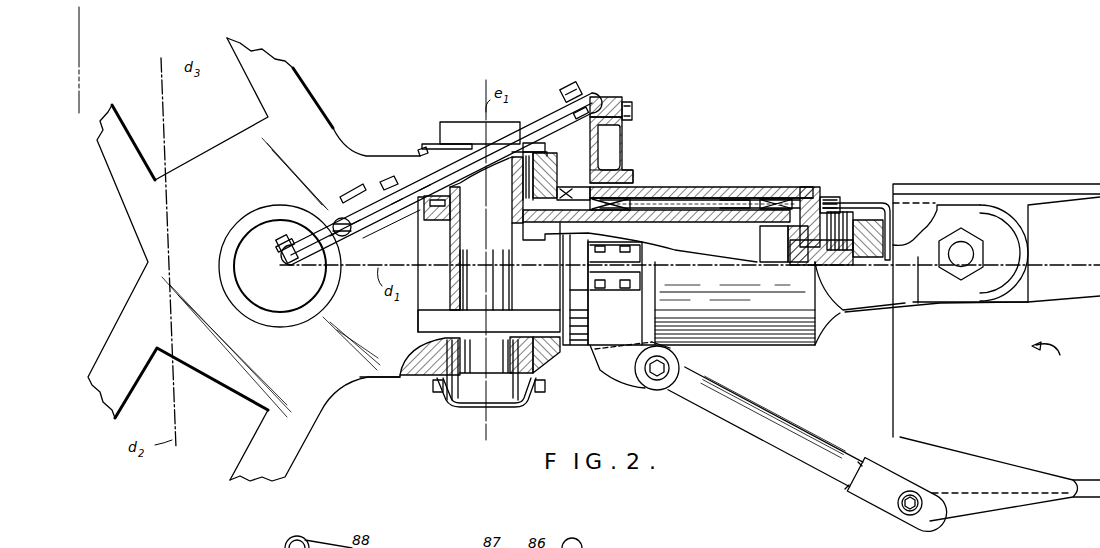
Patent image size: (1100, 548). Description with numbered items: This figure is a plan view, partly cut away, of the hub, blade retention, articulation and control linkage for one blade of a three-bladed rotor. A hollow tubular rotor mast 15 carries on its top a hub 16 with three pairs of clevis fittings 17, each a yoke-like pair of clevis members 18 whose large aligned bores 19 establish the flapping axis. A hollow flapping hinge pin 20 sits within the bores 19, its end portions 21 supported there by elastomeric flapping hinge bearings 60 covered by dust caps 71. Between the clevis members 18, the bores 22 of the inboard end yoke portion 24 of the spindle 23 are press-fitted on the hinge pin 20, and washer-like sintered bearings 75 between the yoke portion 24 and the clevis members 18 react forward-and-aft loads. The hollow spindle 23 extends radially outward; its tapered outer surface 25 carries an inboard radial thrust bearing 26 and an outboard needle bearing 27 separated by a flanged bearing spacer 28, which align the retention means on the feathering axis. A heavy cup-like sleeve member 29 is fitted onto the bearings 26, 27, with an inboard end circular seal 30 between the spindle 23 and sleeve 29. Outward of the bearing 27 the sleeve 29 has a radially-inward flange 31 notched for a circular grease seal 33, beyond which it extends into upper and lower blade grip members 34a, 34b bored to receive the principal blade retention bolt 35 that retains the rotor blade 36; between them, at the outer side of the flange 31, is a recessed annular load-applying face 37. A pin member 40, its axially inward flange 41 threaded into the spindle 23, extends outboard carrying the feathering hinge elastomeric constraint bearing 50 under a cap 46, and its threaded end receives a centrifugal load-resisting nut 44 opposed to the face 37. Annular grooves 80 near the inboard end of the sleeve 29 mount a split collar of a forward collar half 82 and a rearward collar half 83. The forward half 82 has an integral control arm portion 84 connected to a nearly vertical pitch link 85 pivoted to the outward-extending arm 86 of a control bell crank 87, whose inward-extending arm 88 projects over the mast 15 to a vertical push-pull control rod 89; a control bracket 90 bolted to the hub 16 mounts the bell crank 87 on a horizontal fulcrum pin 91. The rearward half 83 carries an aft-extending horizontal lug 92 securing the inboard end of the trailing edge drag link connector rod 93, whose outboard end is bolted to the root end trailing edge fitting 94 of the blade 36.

The rotor mast 15 is at (318, 285).
The hub 16 is at (333, 129).
The clevis fittings 17 is at (296, 74).
The clevis members 18 is at (168, 140).
The bores 19 is at (548, 177).
The flapping hinge pin 20 is at (508, 245).
The end portions 21 is at (512, 173).
The bores 22 is at (458, 210).
The spindle 23 is at (662, 221).
The inboard end yoke portion 24 is at (516, 310).
The tapered radially outer surface 25 is at (708, 207).
The inboard radial thrust bearing 26 is at (660, 197).
The outboard needle bearing 27 is at (770, 206).
The flanged cylindrical bearing spacer 28 is at (734, 207).
The sleeve member 29 is at (721, 190).
The inboard end circular seal 30 is at (572, 197).
The radially-inward flange 31 is at (794, 206).
The circular grease seal 33 is at (795, 235).
The upper blade grip member 34a is at (943, 292).
The lower blade grip member 34b is at (878, 208).
The principal blade retention bolt 35 is at (973, 250).
The rotor blade 36 is at (1046, 361).
The load-applying face 37 is at (822, 204).
The pin member 40 is at (828, 250).
The axially inward flange 41 is at (760, 238).
The centrifugal load-resisting nut 44 is at (884, 236).
The cap 46 is at (884, 215).
The feathering hinge elastomeric constraint bearing 50 is at (848, 217).
The flapping hinge bearings 60 is at (519, 384).
The dust caps 71 is at (478, 128).
The sintered bearings 75 is at (422, 222).
The annular grooves 80 is at (628, 190).
The forward collar half 82 is at (616, 176).
The rearward collar half 83 is at (612, 330).
The control arm portion 84 is at (612, 138).
The pitch link 85 is at (584, 98).
The outward-extending arm 86 is at (521, 128).
The control bell crank 87 is at (386, 184).
The inward-extending arm 88 is at (376, 200).
The push-pull control rod 89 is at (280, 254).
The control bracket 90 is at (351, 219).
The fulcrum pin 91 is at (425, 150).
The aft-extending horizontal lug 92 is at (624, 368).
The trailing edge drag link connector rod 93 is at (795, 434).
The root end trailing edge fitting 94 is at (930, 510).